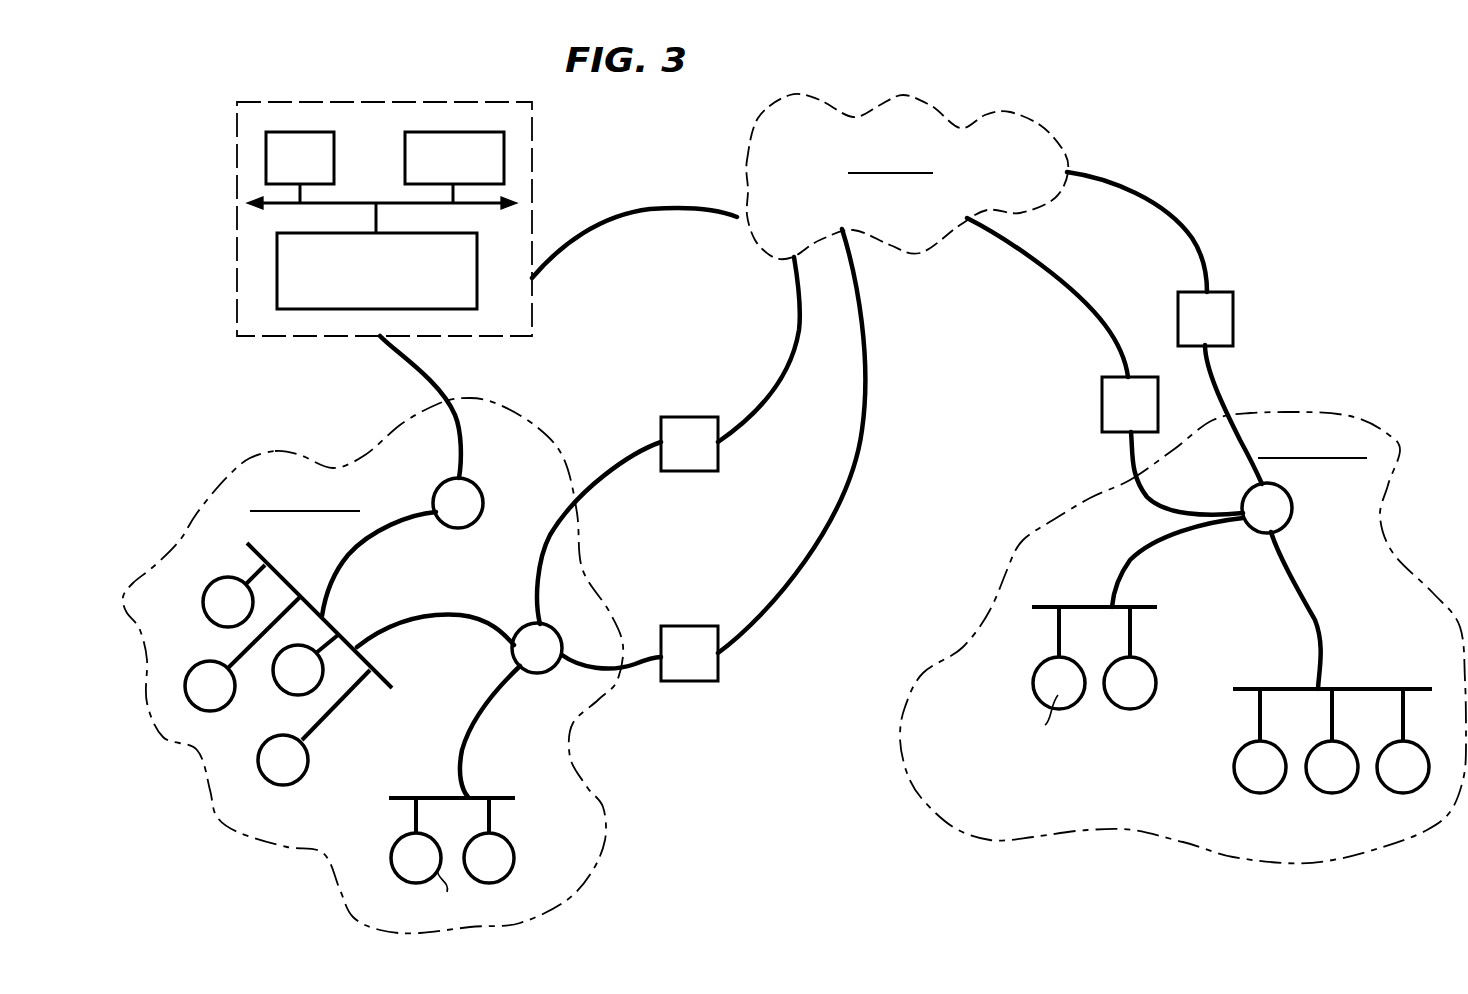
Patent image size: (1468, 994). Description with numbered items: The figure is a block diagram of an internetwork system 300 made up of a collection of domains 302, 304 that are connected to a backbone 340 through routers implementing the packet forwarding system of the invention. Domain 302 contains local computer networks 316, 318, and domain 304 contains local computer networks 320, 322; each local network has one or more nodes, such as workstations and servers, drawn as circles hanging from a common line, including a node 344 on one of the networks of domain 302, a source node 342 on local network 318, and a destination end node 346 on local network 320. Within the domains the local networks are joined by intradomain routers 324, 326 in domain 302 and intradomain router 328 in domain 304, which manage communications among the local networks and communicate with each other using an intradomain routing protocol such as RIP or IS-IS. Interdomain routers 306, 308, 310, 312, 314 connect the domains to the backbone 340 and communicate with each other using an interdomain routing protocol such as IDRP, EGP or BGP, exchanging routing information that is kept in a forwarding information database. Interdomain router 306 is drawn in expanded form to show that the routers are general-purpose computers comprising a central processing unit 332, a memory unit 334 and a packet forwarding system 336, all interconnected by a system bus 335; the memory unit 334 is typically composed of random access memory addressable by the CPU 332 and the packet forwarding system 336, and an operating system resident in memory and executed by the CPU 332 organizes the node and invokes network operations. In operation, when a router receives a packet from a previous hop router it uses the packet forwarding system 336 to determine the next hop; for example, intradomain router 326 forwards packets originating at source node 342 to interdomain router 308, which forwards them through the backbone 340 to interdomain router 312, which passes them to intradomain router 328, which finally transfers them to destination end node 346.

The internetwork system 300 is at (1415, 196).
The domain 302 is at (373, 665).
The domain 304 is at (1183, 637).
The interdomain router 306 is at (440, 102).
The interdomain router 308 is at (680, 417).
The interdomain router 310 is at (680, 626).
The interdomain router 312 is at (1102, 392).
The interdomain router 314 is at (1233, 313).
The local computer network 316 is at (288, 661).
The local computer network 318 is at (422, 836).
The local computer network 320 is at (1038, 664).
The local computer network 322 is at (1393, 689).
The intradomain router 324 is at (481, 494).
The intradomain router 326 is at (550, 673).
The intradomain router 328 is at (1292, 508).
The central processing unit 332 is at (281, 132).
The memory unit 334 is at (405, 143).
The system bus 335 is at (485, 205).
The packet forwarding system 336 is at (277, 272).
The backbone 340 is at (1057, 140).
The source node 342 is at (390, 857).
The node 344 is at (258, 757).
The destination end node 346 is at (1058, 695).